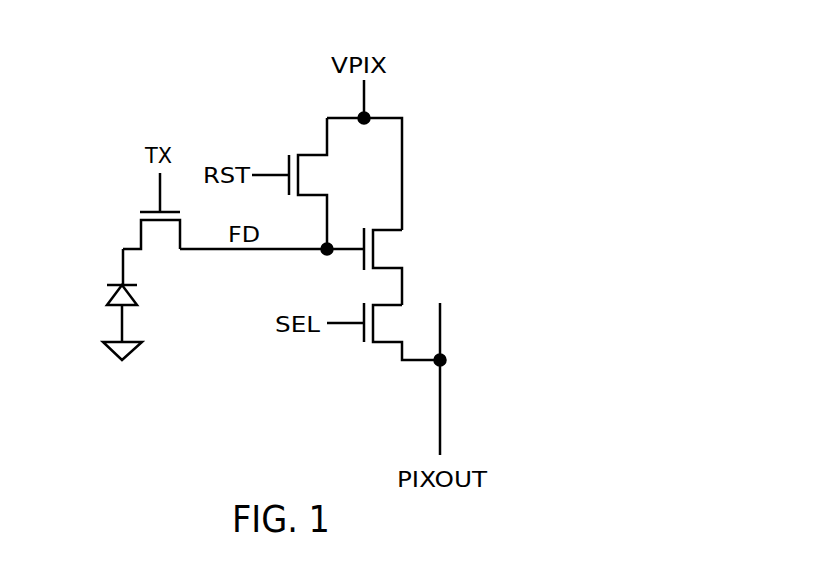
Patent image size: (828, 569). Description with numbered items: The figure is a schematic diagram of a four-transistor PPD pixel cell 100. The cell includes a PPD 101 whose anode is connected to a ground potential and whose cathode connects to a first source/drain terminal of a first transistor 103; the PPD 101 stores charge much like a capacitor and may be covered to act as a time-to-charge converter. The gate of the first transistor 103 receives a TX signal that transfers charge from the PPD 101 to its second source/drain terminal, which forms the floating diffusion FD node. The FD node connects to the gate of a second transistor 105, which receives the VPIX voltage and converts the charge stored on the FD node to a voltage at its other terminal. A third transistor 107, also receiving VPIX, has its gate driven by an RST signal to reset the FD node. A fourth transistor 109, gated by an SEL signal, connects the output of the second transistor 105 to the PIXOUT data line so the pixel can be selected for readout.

The four-transistor PPD pixel cell 100 is at (107, 53).
The PPD 101 is at (101, 304).
The first transistor 103 is at (145, 211).
The second transistor 105 is at (393, 266).
The third transistor 107 is at (298, 183).
The fourth transistor 109 is at (386, 334).